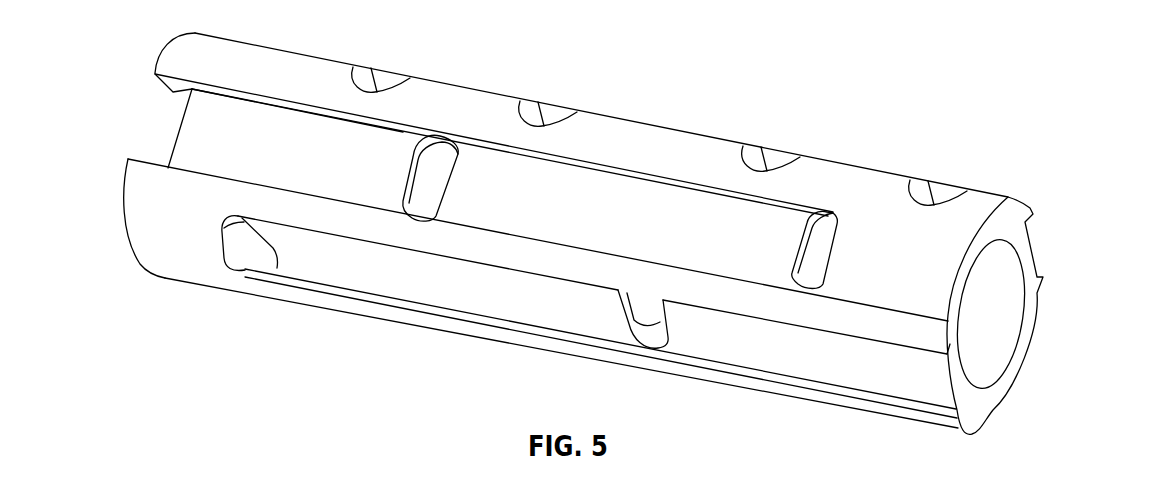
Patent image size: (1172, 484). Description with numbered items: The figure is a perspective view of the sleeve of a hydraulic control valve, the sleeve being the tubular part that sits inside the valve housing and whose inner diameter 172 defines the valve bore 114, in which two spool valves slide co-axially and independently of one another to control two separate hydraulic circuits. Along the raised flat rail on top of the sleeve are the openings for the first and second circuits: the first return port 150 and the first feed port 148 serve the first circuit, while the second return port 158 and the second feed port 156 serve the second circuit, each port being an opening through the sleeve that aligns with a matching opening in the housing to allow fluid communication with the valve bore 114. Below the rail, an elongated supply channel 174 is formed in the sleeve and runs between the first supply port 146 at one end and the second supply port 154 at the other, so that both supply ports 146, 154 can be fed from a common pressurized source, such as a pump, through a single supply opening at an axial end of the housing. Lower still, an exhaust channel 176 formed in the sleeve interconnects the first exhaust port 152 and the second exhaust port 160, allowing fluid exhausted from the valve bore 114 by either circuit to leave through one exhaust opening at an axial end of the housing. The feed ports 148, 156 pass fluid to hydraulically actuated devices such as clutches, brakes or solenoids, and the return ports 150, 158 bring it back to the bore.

The valve bore 114 is at (998, 280).
The first supply port 146 is at (433, 170).
The first feed port 148 is at (546, 124).
The first return port 150 is at (383, 88).
The first exhaust port 152 is at (263, 258).
The second supply port 154 is at (829, 242).
The second feed port 156 is at (947, 192).
The second return port 158 is at (777, 165).
The second exhaust port 160 is at (657, 320).
The inner diameter 172 is at (997, 337).
The supply channel 174 is at (210, 147).
The exhaust channel 176 is at (860, 370).